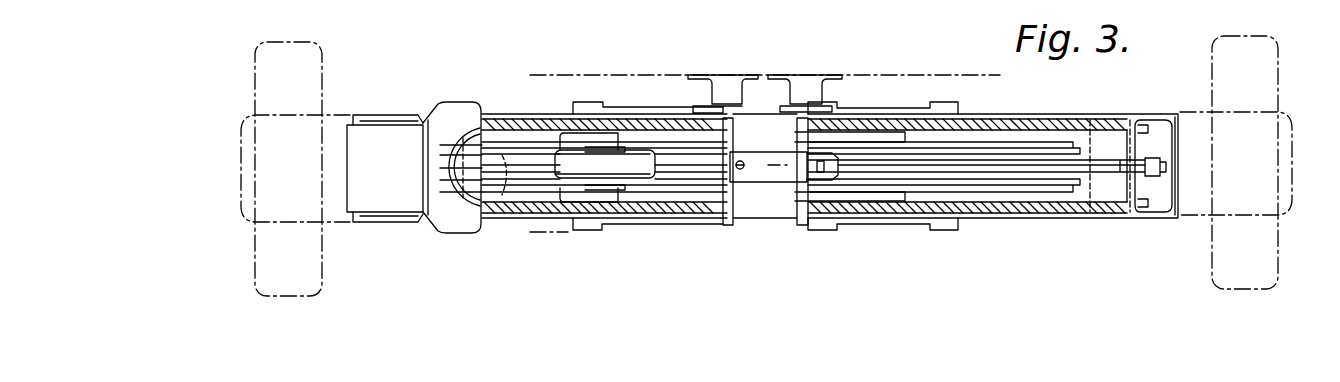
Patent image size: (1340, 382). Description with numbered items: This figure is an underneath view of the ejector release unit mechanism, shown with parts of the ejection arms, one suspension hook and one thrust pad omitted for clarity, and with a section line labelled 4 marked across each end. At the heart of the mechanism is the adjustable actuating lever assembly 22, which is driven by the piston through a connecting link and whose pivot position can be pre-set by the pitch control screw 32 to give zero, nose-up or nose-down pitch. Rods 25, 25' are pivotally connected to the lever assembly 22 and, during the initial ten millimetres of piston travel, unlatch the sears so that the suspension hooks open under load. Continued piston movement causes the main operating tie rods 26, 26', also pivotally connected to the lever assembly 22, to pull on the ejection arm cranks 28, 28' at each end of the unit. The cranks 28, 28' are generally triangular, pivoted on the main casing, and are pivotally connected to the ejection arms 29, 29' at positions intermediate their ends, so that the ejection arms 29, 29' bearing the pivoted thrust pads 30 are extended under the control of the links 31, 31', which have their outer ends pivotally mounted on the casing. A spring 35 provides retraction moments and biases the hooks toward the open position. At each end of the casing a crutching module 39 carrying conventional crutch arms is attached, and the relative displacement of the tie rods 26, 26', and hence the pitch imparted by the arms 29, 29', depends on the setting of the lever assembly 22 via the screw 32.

The section line 4- 4 is at (243, 135).
The actuating lever assembly 22 is at (755, 172).
The rod 25 is at (451, 199).
The rod 25' is at (976, 208).
The main operating tie rod 26 is at (464, 186).
The main operating tie rod 26' is at (944, 135).
The ejection arm crank 28 is at (604, 192).
The ejection arm crank 28' is at (875, 119).
The ejection arm 29 is at (604, 236).
The ejection arm 29' is at (967, 235).
The thrust pad 30 is at (378, 137).
The control link 31 is at (636, 156).
The control link 31' is at (883, 153).
The pitch control screw 32 is at (736, 163).
The spring 35 is at (603, 190).
The crutching module 39 is at (250, 206).